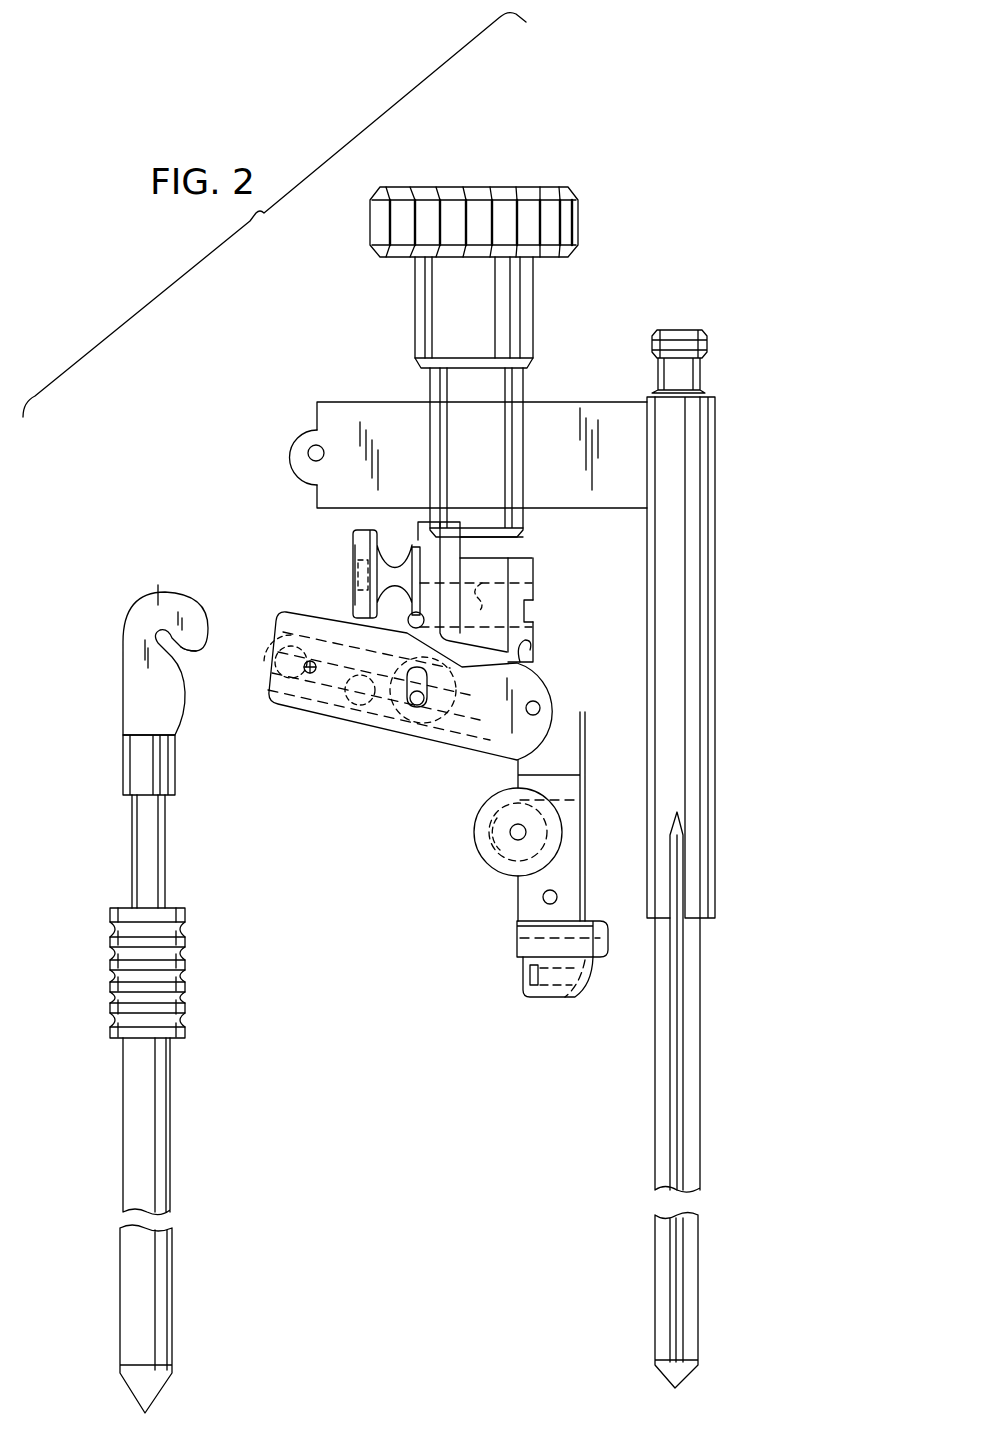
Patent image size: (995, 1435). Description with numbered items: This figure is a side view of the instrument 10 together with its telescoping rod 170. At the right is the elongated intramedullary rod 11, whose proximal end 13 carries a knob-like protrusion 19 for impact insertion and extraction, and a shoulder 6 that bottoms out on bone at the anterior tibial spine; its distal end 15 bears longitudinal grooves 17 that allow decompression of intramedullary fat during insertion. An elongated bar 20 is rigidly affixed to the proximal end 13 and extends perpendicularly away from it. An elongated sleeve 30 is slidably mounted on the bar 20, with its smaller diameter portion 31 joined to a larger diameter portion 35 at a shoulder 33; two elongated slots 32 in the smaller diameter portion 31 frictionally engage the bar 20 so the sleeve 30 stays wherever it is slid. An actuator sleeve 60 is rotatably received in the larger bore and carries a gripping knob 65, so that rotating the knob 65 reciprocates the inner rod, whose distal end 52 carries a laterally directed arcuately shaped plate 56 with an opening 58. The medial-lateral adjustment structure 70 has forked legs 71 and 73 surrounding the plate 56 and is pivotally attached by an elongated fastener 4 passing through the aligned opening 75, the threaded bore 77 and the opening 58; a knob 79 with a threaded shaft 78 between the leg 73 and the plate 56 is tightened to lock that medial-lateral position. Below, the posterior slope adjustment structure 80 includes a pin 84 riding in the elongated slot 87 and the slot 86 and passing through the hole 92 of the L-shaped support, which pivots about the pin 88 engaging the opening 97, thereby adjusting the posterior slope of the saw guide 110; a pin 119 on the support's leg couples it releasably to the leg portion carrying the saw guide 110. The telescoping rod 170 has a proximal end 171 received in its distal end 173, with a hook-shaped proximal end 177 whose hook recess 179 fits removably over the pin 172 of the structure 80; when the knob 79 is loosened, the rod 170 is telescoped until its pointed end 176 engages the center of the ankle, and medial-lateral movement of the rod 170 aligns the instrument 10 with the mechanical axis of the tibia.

The instrument 10 is at (283, 370).
The actuator sleeve 60 is at (592, 190).
The gripping knob 65 is at (582, 232).
The elongated sleeve 30 is at (557, 335).
The larger diameter portion 35 is at (478, 303).
The shoulder 33 is at (531, 367).
The smaller diameter portion 31 is at (476, 419).
The elongated bar 20 is at (352, 420).
The elongated slots 32 is at (430, 448).
The knob-like protrusion 19 is at (700, 345).
The proximal end 13 is at (705, 605).
The intramedullary rod 11 is at (735, 838).
The longitudinal grooves 17 is at (683, 1048).
The shoulder 6 is at (700, 925).
The distal end 15 is at (683, 1285).
The medial-lateral adjustment structure 70 is at (562, 625).
The leg 73 is at (440, 565).
The distal end 52 is at (505, 550).
The arcuately shaped plate 56 is at (505, 575).
The opening 58 is at (491, 604).
The leg 71 is at (530, 577).
The elongated fastener 4 is at (534, 601).
The opening 75 is at (535, 640).
The threaded shaft 78 is at (385, 592).
The knob 79 is at (346, 528).
The bore 77 is at (457, 670).
The posterior slope adjustment structure 80 is at (393, 782).
The pin 172 is at (313, 685).
The elongated slot 87 is at (361, 684).
The slot 86 is at (442, 697).
The pin 84 is at (420, 713).
The hole 92 is at (417, 708).
The opening 97 is at (552, 716).
The pin 88 is at (540, 706).
The saw guide 110 is at (500, 962).
The pin 119 is at (543, 897).
The telescoping rod 170 is at (212, 1143).
The proximal end 177 is at (155, 600).
The hook recess 179 is at (186, 652).
The proximal end 171 is at (160, 850).
The distal end 173 is at (160, 1187).
The pointed end 176 is at (153, 1395).